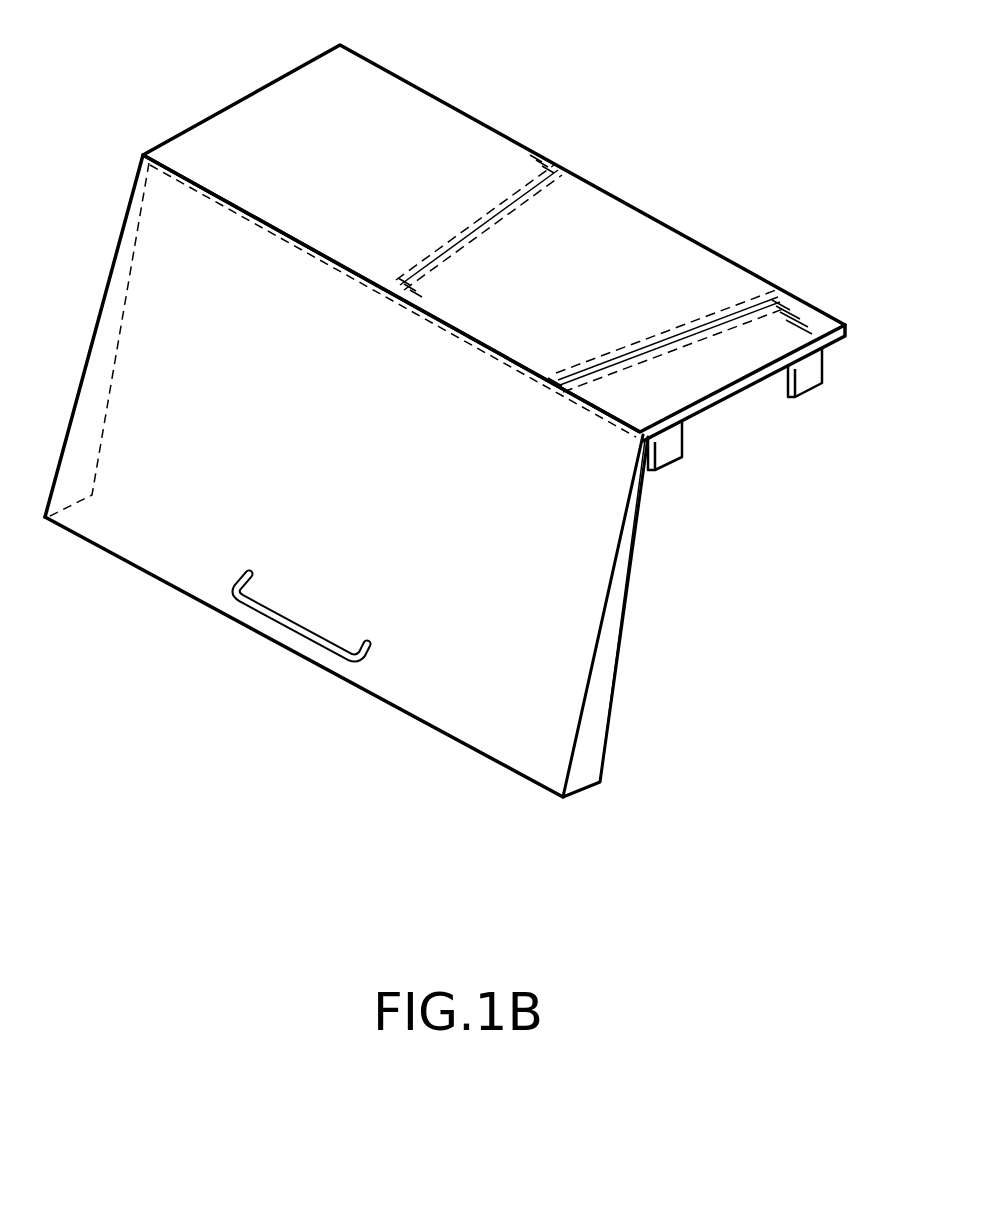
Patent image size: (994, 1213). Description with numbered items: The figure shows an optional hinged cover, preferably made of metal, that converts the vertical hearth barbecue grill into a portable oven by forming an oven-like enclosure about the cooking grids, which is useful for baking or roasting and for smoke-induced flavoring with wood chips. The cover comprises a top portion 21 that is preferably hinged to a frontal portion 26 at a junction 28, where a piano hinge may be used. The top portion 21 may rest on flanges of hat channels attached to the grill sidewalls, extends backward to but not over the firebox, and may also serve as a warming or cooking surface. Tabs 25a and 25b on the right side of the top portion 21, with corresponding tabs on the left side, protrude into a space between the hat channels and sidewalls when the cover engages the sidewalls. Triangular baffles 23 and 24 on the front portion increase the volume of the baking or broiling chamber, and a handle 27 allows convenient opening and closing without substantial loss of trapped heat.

The top portion 21 is at (238, 100).
The triangular baffle 23 is at (97, 330).
The triangular baffle 24 is at (615, 667).
The tab 25a is at (672, 463).
The tab 25b is at (805, 397).
The frontal portion 26 is at (123, 563).
The handle 27 is at (266, 617).
The junction 28 is at (305, 245).